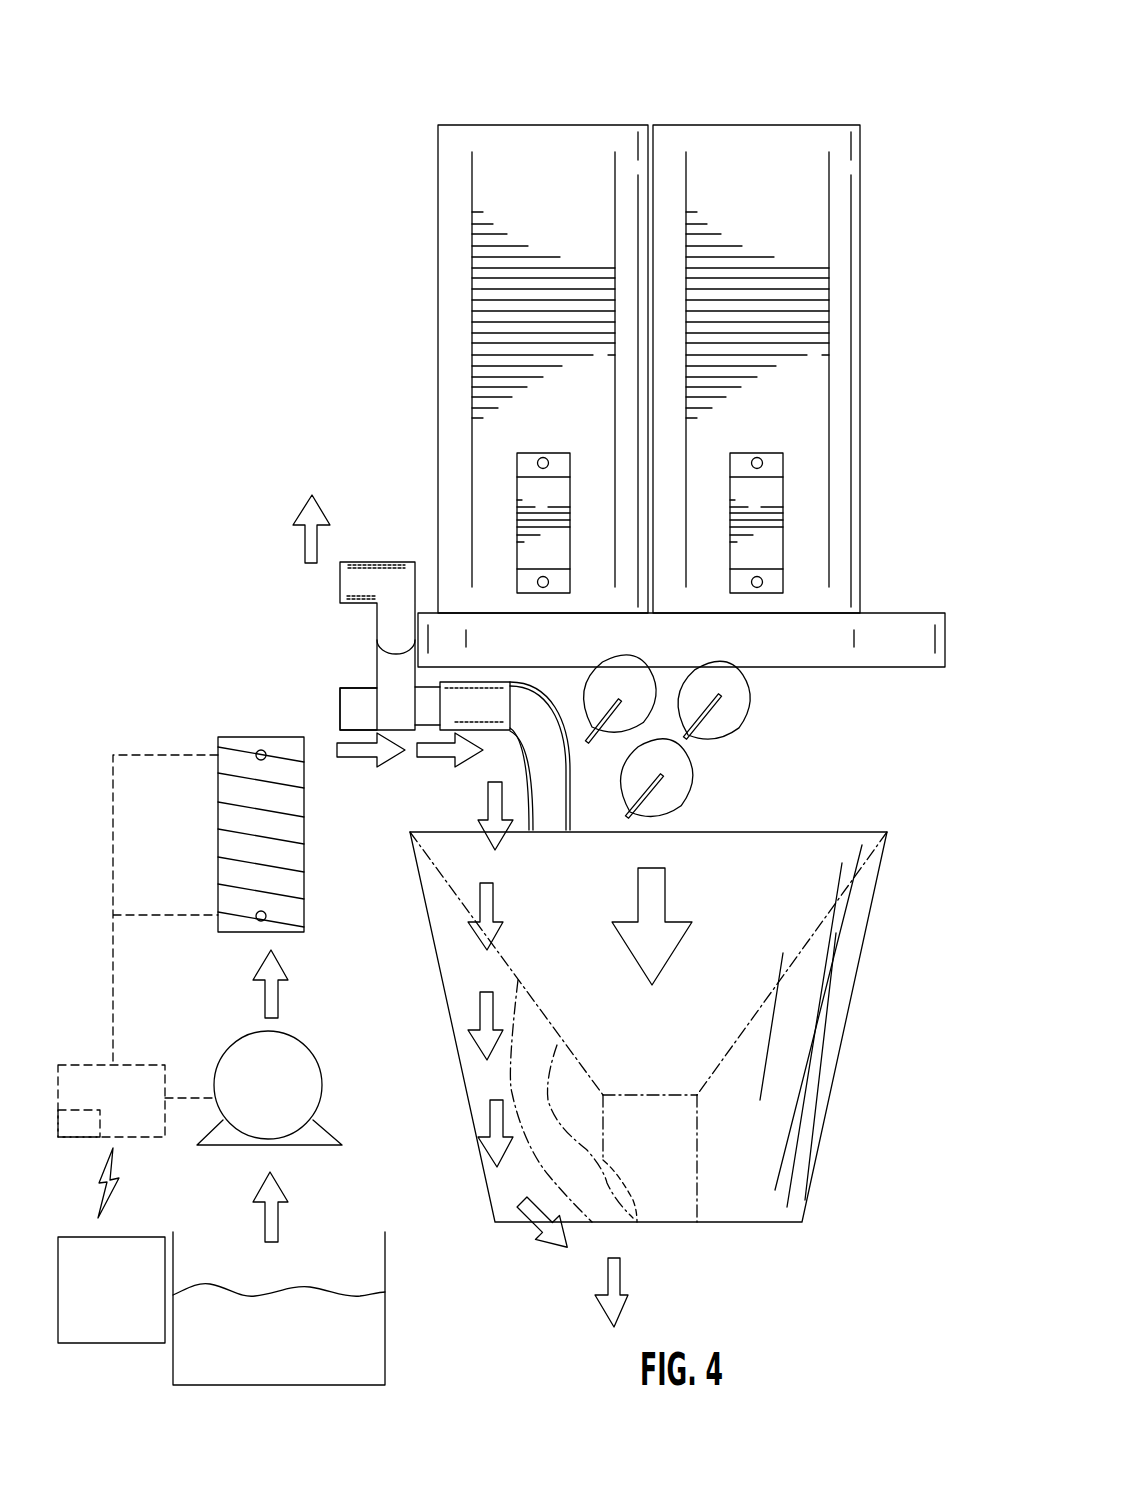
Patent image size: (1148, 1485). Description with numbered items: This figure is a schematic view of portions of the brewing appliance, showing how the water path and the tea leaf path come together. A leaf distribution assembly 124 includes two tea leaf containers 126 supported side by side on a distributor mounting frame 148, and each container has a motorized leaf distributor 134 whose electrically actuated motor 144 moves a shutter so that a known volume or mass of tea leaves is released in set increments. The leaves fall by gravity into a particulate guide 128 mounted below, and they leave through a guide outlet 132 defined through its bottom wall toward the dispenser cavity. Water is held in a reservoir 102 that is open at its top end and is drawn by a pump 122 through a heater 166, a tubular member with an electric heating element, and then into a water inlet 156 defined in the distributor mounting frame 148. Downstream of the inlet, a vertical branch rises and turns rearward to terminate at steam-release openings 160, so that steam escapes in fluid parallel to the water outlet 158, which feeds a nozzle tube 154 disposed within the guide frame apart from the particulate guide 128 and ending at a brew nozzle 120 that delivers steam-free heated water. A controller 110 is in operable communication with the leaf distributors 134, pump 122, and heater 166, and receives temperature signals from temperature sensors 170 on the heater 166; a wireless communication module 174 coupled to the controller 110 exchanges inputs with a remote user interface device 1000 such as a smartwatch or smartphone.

The leaf distribution assembly 124 is at (906, 98).
The tea leaf container 126 is at (543, 148).
The motorized leaf distributor 134 is at (543, 432).
The electrically actuated motor 144 is at (527, 520).
The distributor mounting frame 148 is at (935, 612).
The steam-release opening 160 is at (330, 585).
The water inlet 156 is at (330, 717).
The water outlet 158 is at (523, 708).
The particulate guide 128 is at (802, 953).
The guide outlet 132 is at (683, 1231).
The nozzle tube 154 is at (550, 1165).
The brew nozzle 120 is at (607, 1217).
The heater 166 is at (302, 848).
The temperature sensor 170 is at (268, 756).
The controller 110 is at (140, 1065).
The wireless communication module 174 is at (85, 1110).
The pump 122 is at (323, 1088).
The remote user interface device 1000 is at (143, 1237).
The reservoir 102 is at (388, 1330).